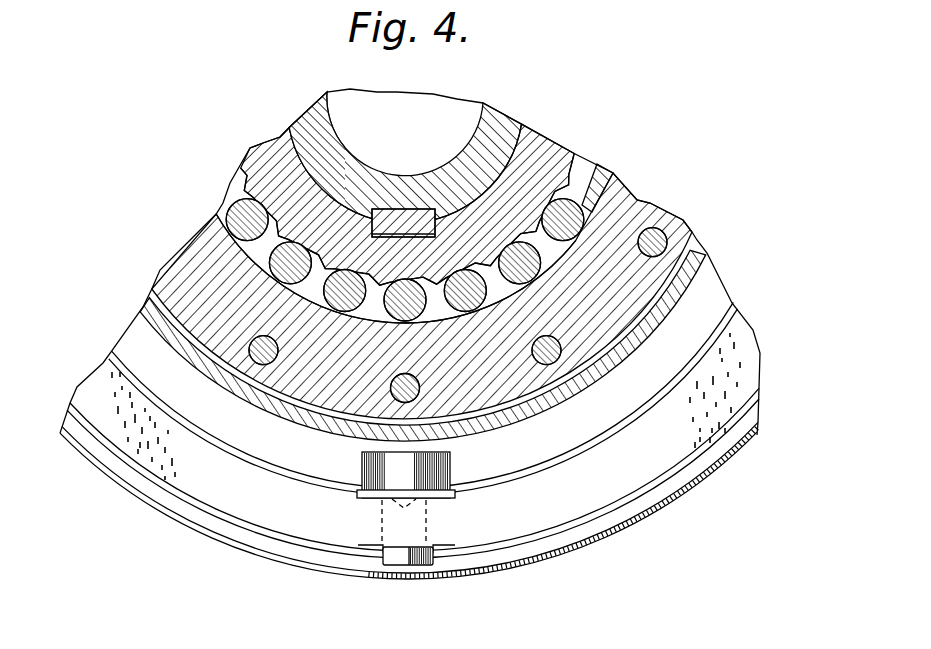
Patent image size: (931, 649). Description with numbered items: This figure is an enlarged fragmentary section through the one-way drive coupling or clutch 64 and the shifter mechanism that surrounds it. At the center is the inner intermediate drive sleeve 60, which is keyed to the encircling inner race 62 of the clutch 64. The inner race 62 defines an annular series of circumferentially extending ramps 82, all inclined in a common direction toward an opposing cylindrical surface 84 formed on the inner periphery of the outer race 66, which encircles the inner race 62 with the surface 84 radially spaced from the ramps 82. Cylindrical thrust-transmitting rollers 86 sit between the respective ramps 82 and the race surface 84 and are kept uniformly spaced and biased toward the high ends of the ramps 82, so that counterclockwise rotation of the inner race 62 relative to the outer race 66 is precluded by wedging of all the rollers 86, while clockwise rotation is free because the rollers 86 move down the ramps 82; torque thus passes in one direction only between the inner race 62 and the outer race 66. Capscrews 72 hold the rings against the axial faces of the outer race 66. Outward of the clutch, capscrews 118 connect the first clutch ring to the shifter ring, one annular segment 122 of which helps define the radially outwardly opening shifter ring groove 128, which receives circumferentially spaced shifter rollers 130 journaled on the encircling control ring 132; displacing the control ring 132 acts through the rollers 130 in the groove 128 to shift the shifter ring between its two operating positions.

The inner intermediate drive sleeve 60 is at (289, 127).
The inner race 62 is at (547, 140).
The one-way drive coupling 64 is at (223, 188).
The outer race 66 is at (650, 203).
The capscrews 72 is at (662, 243).
The ramps 82 is at (598, 172).
The cylindrical surface 84 is at (596, 196).
The rollers 86 is at (222, 212).
The capscrews 118 is at (377, 535).
The annular segment 122 is at (713, 300).
The shifter ring groove 128 is at (517, 417).
The shifter rollers 130 is at (380, 485).
The control ring 132 is at (540, 527).